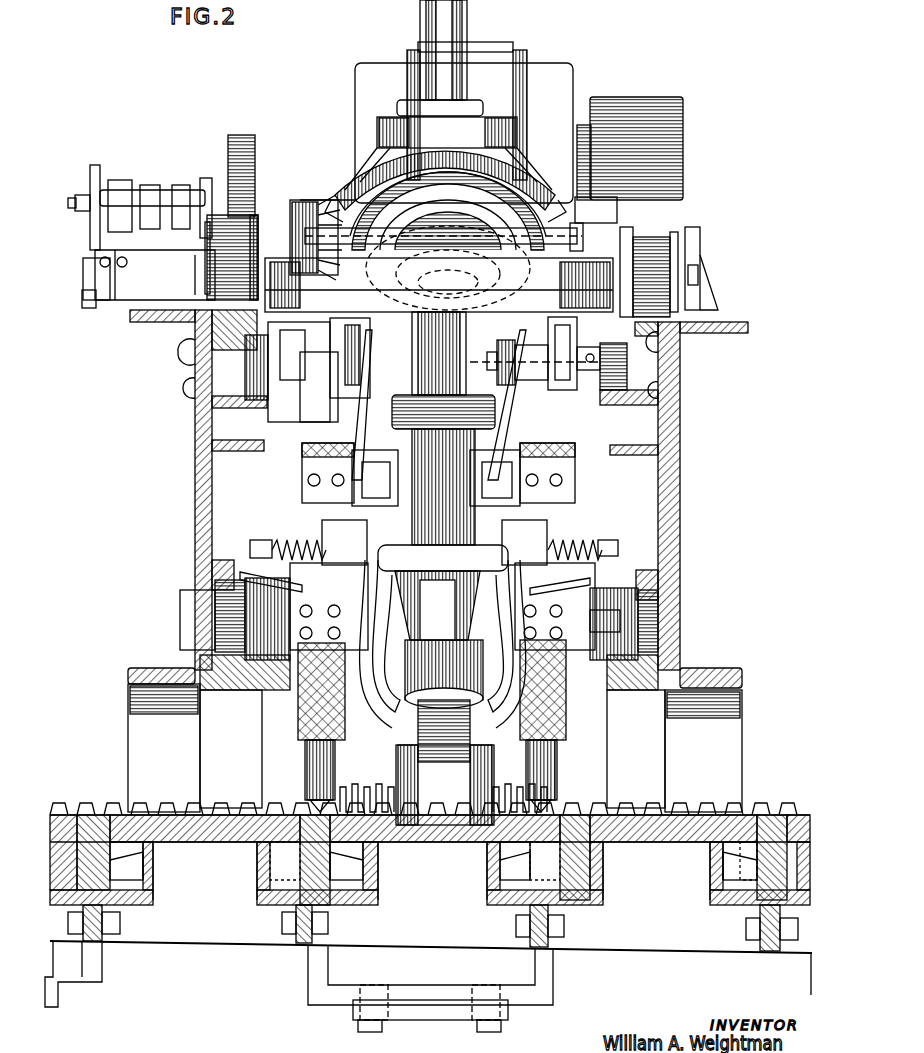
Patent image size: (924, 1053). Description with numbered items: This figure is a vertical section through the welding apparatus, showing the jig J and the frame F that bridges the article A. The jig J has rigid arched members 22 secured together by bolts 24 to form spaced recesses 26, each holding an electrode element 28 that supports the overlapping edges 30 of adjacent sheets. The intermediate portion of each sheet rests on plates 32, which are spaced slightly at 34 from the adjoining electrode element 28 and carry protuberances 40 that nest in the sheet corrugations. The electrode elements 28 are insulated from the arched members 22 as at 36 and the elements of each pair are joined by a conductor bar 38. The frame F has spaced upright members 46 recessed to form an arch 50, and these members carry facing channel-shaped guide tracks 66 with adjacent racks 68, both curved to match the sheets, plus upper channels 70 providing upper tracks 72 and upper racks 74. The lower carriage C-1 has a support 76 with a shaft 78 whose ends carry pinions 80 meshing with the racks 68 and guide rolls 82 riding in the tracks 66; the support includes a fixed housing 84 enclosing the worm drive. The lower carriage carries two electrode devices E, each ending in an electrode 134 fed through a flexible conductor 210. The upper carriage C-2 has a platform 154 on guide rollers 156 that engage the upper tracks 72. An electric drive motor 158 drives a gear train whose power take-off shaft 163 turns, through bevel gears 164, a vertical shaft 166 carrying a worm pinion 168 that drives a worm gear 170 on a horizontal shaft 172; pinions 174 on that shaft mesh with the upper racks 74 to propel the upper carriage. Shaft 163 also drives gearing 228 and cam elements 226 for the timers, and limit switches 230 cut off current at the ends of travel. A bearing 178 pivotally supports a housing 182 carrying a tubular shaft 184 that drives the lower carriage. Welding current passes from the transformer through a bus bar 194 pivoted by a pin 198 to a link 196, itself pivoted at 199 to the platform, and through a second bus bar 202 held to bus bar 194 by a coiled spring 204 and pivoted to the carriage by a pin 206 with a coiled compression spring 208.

The electric drive motor 158 is at (512, 45).
The upper carriage C-2 is at (352, 103).
The gearing 228 is at (240, 136).
The cam elements 226 is at (110, 170).
The bevel gears 164 is at (300, 200).
The power take-off shaft 163 is at (352, 200).
The housing 182 is at (520, 165).
The bearing 178 is at (556, 185).
The guide rollers 156 is at (660, 262).
The limit switches 230 is at (108, 300).
The platform 154 is at (285, 300).
The tubular shaft 184 is at (425, 321).
The vertical shaft 166 is at (370, 334).
The horizontal shaft 172 is at (468, 360).
The pivot 199 is at (441, 355).
The upper tracks 72 is at (185, 340).
The pinions 174 is at (245, 355).
The channels 70 is at (196, 395).
The upper racks 74 is at (262, 410).
The link 196 is at (372, 420).
The worm pinion 168 is at (300, 400).
The worm gear 170 is at (305, 430).
The upright members 46 is at (195, 487).
The lower carriage C-1 is at (575, 503).
The pin 206 is at (252, 540).
The coiled compression spring 208 is at (297, 540).
The frame F is at (190, 532).
The channel-shaped guide tracks 66 is at (212, 556).
The frame or support 76 is at (252, 572).
The guide rolls 82 is at (215, 578).
The shaft 78 is at (215, 600).
The pinions 80 is at (240, 612).
The pivot pin 198 is at (398, 500).
The racks 68 is at (240, 688).
The arch 50 is at (190, 700).
The bus bar 194 is at (385, 675).
The fixed housing 84 is at (420, 715).
The second bus bar 202 is at (420, 770).
The coiled spring 204 is at (470, 785).
The flexible conductor 210 is at (345, 742).
The electrode 134 is at (336, 775).
The electrode devices E is at (303, 765).
The overlapping edges 30 is at (90, 803).
The protuberances 40 is at (160, 812).
The plates 32 is at (192, 812).
The article A is at (114, 796).
The jig J is at (200, 848).
The electrode elements 28 is at (740, 872).
The arched members 22 is at (212, 845).
The space 34 is at (512, 858).
The recesses 26 is at (405, 880).
The insulation 36 is at (400, 900).
The bolts 24 is at (292, 930).
The conductor bar 38 is at (458, 1022).